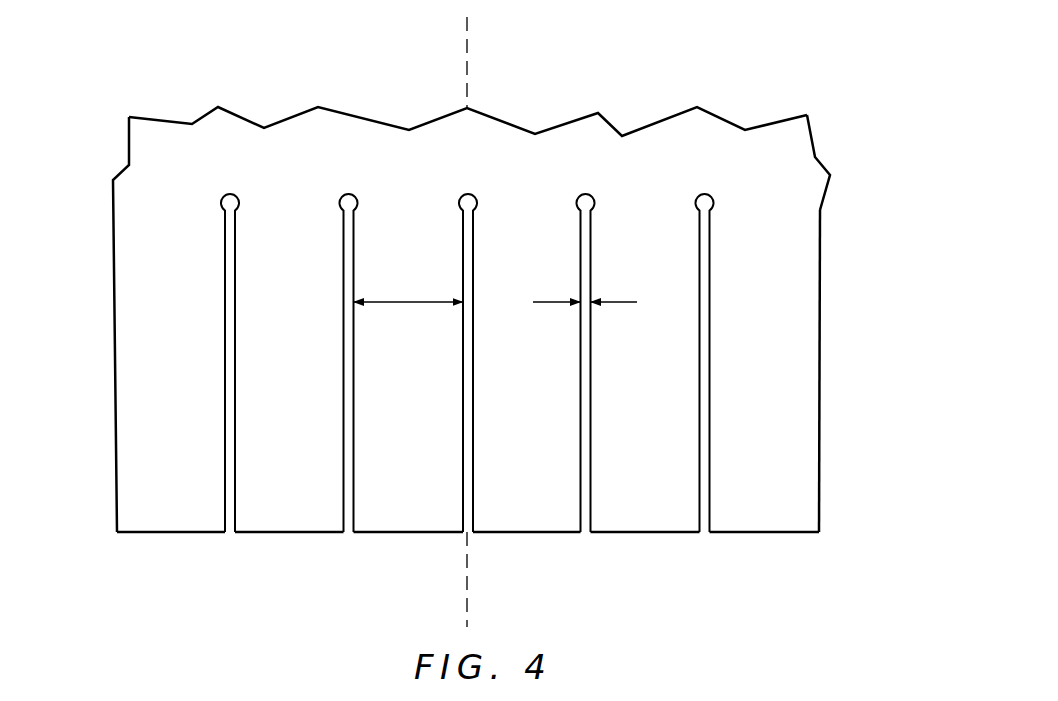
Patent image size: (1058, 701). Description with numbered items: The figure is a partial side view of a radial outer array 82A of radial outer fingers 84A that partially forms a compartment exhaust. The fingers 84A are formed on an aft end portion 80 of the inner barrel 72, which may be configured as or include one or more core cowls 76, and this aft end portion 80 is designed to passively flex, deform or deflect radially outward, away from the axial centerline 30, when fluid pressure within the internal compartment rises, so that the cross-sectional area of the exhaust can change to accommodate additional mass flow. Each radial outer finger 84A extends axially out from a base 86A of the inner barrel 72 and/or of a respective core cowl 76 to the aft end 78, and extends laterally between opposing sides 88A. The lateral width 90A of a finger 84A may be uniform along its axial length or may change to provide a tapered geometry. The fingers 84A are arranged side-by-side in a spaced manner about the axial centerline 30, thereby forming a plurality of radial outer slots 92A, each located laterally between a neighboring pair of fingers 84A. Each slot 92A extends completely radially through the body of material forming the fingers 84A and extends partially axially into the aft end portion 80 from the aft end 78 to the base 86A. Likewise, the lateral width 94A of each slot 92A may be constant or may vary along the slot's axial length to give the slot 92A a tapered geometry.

The axial centerline 30 is at (462, 30).
The inner barrel 72 is at (468, 88).
The core cowl 76 is at (763, 125).
The aft end 78 is at (802, 535).
The aft end portion 80 is at (823, 83).
The radial outer array 82A is at (88, 447).
The radial outer finger 84A is at (167, 537).
The base 86A is at (817, 155).
The opposing sides 88A is at (344, 348).
The lateral width 90A is at (408, 300).
The radial outer slot 92A is at (225, 452).
The lateral width 94A is at (621, 300).